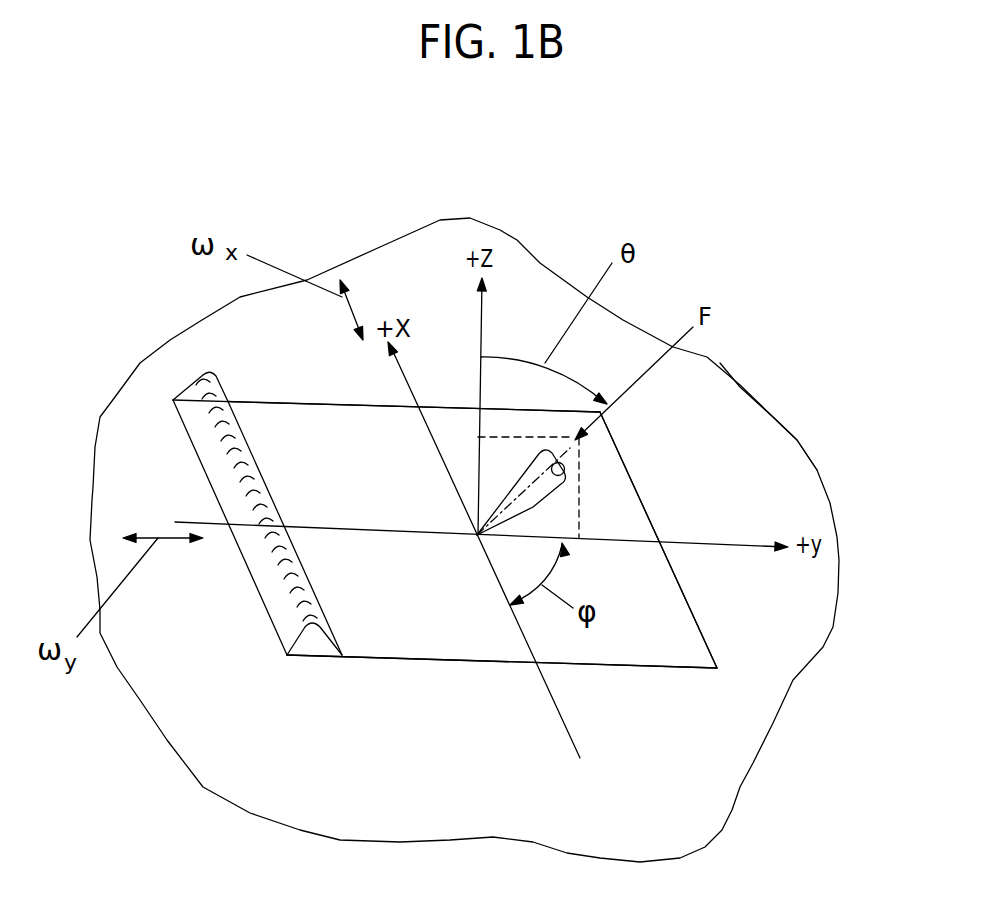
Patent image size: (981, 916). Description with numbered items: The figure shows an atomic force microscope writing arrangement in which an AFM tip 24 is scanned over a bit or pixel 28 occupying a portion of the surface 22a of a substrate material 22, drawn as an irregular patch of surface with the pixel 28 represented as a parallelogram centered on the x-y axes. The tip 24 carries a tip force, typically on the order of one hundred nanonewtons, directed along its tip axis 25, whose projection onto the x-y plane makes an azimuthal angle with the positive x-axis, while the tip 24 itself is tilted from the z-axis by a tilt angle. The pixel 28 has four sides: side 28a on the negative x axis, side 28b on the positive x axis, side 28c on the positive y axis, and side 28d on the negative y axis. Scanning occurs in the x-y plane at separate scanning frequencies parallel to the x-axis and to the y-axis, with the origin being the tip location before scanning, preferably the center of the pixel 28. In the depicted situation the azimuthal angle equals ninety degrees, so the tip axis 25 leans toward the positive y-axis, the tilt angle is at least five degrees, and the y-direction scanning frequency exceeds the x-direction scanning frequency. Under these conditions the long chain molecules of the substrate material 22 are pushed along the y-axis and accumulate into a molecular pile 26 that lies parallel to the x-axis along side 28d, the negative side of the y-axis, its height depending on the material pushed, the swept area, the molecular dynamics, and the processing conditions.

The substrate material 22 is at (663, 205).
The surface of the substrate material 22a is at (772, 452).
The AFM tip 24 is at (528, 469).
The tip axis 25 is at (560, 477).
The molecular pile 26 is at (318, 610).
The pixel 28 is at (682, 642).
The side of the pixel on the negative x axis 28a is at (288, 402).
The side of the pixel on the x axis 28b is at (470, 662).
The side of the pixel on the y axis 28c is at (625, 463).
The side of the pixel on the negative y axis 28d is at (207, 478).